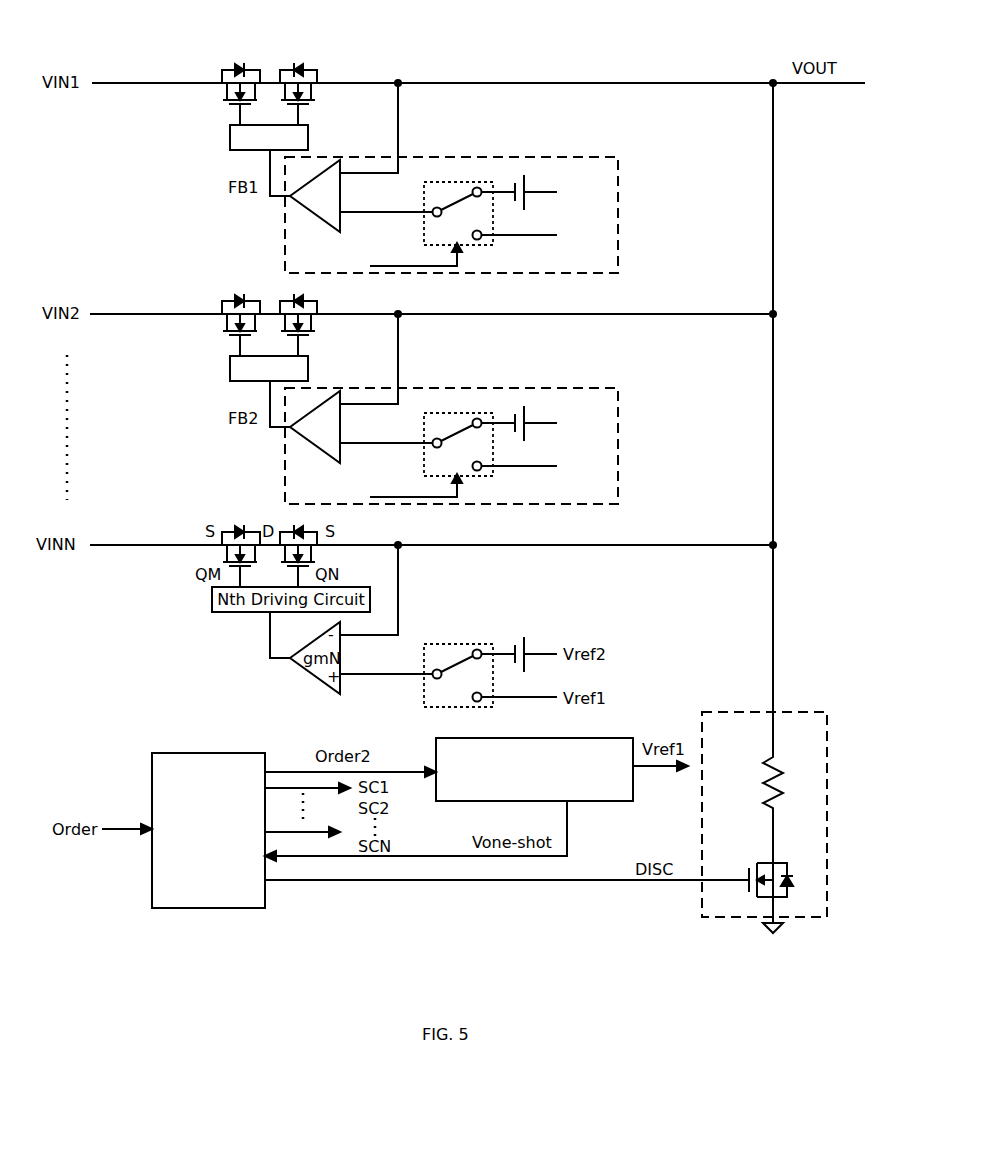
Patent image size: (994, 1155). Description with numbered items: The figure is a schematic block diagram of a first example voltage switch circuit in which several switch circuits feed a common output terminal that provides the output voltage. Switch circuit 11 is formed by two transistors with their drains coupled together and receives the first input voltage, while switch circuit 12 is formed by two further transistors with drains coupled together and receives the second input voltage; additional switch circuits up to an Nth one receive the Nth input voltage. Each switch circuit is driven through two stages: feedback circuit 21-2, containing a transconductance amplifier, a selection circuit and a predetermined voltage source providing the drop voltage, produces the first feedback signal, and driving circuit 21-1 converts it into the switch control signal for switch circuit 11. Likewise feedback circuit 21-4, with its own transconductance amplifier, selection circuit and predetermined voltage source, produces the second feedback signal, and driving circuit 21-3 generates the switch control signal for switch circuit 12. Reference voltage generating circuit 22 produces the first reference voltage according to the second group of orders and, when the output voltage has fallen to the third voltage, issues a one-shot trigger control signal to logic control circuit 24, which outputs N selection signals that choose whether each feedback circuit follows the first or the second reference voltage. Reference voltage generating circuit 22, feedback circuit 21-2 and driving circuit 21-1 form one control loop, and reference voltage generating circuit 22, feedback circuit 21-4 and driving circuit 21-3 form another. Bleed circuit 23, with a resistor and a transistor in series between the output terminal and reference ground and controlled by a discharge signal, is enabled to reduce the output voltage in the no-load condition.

The switch circuit 11 is at (280, 54).
The switch circuit 12 is at (270, 308).
The driving circuit 21-1 is at (286, 147).
The feedback circuit 21-2 is at (488, 156).
The driving circuit 21-3 is at (269, 368).
The feedback circuit 21-4 is at (451, 409).
The reference voltage generating circuit 22 is at (616, 792).
The bleed circuit 23 is at (720, 712).
The logic control circuit 24 is at (247, 861).